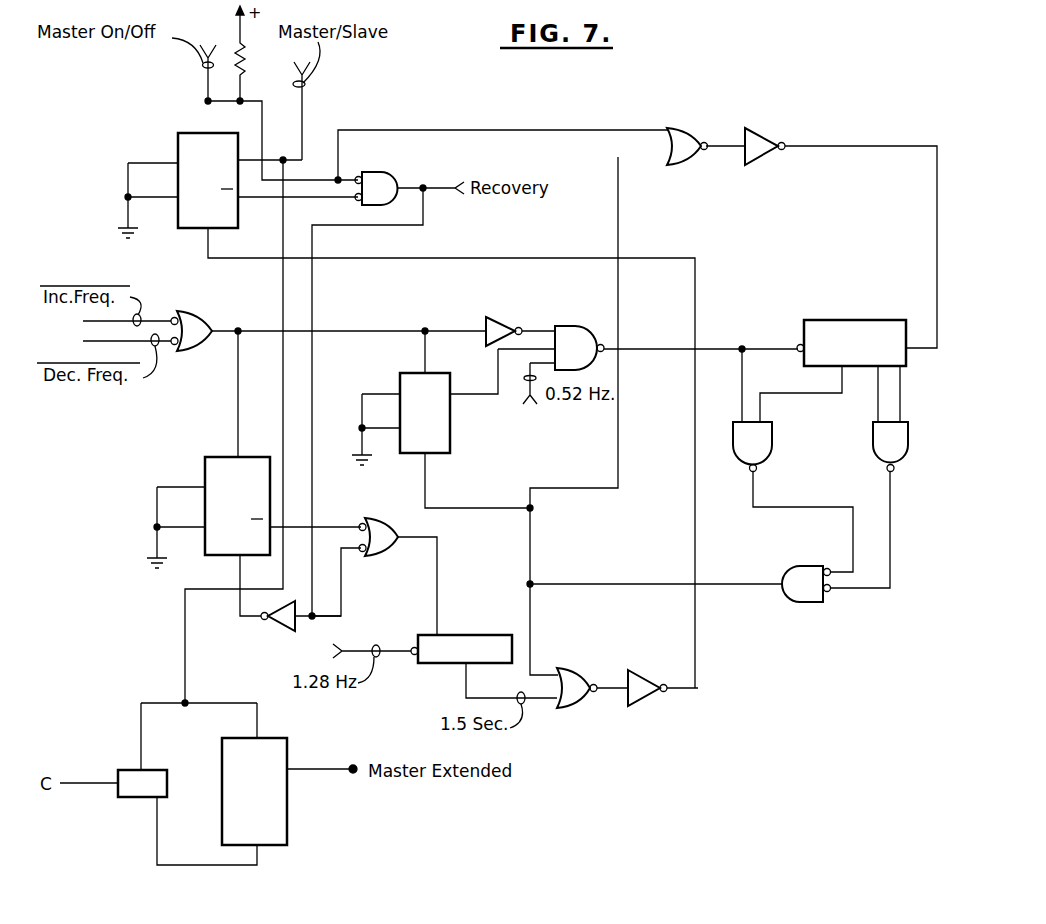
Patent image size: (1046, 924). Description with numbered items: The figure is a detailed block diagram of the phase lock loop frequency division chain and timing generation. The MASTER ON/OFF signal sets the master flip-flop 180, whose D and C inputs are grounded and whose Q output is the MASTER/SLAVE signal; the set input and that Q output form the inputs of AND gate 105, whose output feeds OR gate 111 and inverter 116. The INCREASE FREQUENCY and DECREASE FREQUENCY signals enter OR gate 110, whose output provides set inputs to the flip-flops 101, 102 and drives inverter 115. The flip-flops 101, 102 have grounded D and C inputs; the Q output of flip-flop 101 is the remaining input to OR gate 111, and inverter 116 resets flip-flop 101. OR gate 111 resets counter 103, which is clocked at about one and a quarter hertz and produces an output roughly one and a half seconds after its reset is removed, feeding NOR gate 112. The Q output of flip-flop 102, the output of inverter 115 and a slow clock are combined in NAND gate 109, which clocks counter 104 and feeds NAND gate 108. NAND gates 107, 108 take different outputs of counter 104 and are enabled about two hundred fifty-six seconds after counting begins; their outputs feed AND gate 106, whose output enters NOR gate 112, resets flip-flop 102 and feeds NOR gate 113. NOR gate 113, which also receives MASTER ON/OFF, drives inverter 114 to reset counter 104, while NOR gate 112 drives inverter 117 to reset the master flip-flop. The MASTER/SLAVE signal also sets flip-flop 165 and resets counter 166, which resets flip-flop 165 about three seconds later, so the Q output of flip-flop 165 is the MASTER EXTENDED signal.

The master on/off flip-flop 180 is at (186, 141).
The AND gate 105 is at (381, 183).
The NOR gate 113 is at (673, 135).
The inverter 114 is at (760, 138).
The counter 104 is at (871, 320).
The NAND gate 108 is at (762, 448).
The NAND gate 107 is at (886, 441).
The AND gate 106 is at (803, 576).
The OR gate 110 is at (203, 318).
The inverter 115 is at (503, 318).
The NAND gate 109 is at (575, 344).
The flip-flop 102 is at (454, 414).
The flip-flop 101 is at (214, 465).
The OR gate 111 is at (381, 523).
The inverter 116 is at (285, 623).
The counter 103 is at (500, 634).
The NOR gate 112 is at (580, 674).
The inverter 117 is at (642, 678).
The counter 166 is at (137, 796).
The flip-flop 165 is at (262, 799).